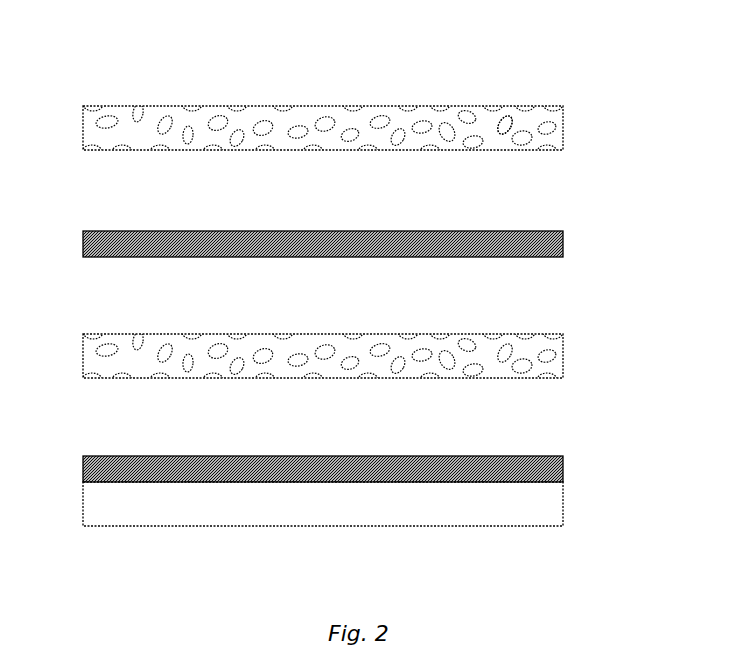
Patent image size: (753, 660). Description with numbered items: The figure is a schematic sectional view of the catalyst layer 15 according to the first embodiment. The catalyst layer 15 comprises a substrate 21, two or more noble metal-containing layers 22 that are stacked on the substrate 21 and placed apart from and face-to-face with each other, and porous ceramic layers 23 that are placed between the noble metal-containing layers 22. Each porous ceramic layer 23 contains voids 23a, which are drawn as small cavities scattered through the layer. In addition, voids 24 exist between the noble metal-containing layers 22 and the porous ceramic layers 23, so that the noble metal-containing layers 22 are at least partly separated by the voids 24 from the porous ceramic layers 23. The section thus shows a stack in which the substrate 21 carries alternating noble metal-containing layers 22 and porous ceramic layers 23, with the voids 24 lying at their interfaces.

The catalyst layer 15 is at (327, 86).
The substrate 21 is at (548, 505).
The noble metal-containing layer 22 is at (555, 239).
The porous ceramic layer 23 is at (557, 119).
The void 23a is at (509, 116).
The void 24 is at (548, 197).